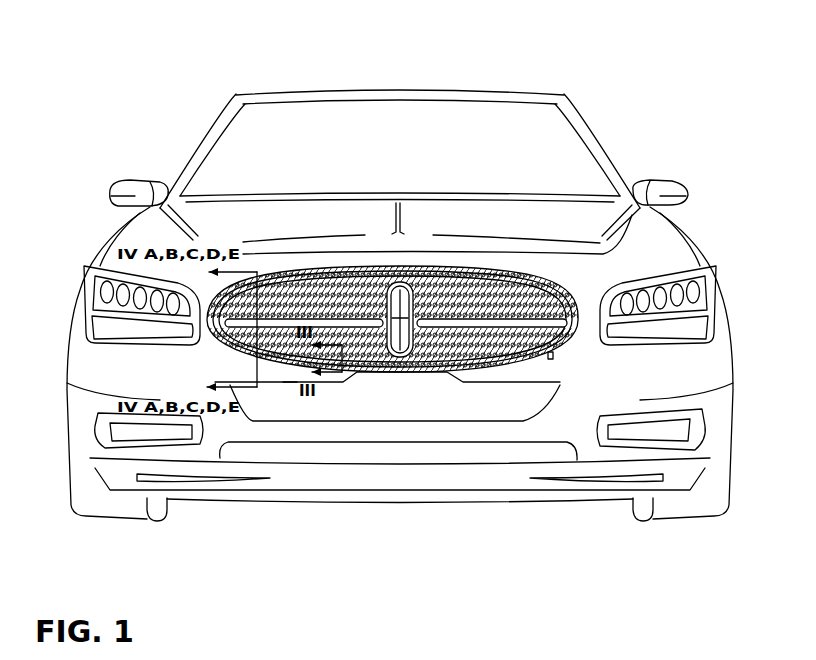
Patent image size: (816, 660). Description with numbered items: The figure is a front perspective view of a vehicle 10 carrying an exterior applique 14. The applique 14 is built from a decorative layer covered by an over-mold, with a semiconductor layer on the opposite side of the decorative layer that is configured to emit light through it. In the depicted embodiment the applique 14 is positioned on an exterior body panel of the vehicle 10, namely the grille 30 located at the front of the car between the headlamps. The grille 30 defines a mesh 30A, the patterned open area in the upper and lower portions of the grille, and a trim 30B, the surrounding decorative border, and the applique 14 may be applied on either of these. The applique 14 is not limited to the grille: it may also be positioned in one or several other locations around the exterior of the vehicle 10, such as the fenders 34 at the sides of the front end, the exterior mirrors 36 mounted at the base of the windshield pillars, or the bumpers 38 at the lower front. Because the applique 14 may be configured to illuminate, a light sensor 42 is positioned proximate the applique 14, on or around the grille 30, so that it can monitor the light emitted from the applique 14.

The vehicle 10 is at (442, 76).
The applique 14 is at (690, 258).
The grille 30 is at (501, 264).
The mesh 30A is at (548, 300).
The trim 30B is at (572, 350).
The fenders 34 is at (102, 236).
The exterior mirrors 36 is at (133, 185).
The bumpers 38 is at (222, 446).
The light sensor 42 is at (553, 360).